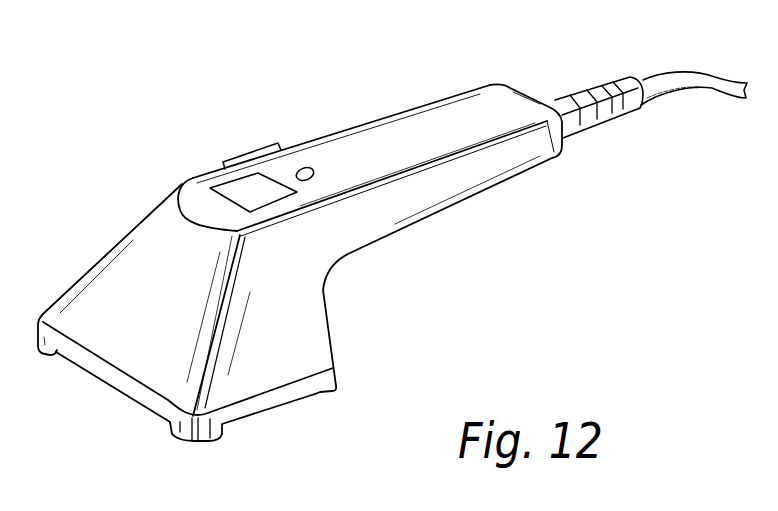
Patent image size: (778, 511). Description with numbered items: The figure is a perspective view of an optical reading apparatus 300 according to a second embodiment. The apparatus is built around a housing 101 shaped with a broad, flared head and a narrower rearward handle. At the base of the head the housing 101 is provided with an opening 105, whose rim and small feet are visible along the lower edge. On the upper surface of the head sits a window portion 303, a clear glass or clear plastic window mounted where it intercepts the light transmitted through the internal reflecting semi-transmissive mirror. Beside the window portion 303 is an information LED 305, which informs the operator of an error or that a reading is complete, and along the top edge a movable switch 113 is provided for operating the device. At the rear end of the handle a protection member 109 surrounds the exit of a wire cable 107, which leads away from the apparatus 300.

The optical reading apparatus 300 is at (440, 84).
The housing 101 is at (437, 210).
The opening 105 is at (290, 407).
The wire cable 107 is at (707, 92).
The protection member 109 is at (580, 92).
The movable switch 113 is at (258, 150).
The window portion 303 is at (222, 190).
The information LED 305 is at (312, 168).